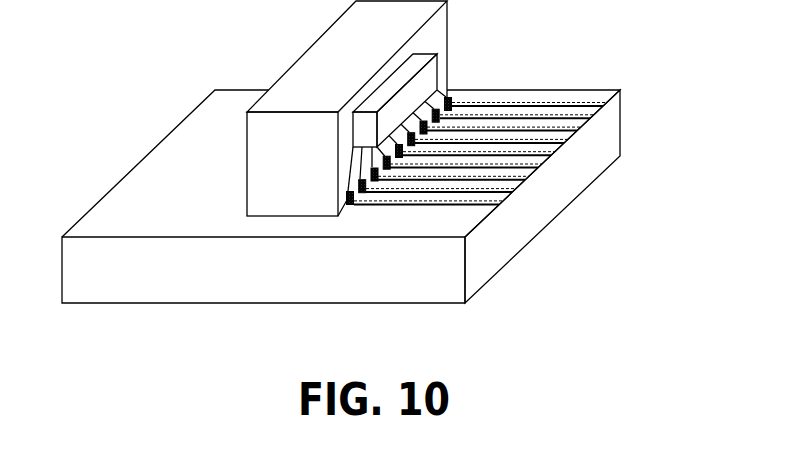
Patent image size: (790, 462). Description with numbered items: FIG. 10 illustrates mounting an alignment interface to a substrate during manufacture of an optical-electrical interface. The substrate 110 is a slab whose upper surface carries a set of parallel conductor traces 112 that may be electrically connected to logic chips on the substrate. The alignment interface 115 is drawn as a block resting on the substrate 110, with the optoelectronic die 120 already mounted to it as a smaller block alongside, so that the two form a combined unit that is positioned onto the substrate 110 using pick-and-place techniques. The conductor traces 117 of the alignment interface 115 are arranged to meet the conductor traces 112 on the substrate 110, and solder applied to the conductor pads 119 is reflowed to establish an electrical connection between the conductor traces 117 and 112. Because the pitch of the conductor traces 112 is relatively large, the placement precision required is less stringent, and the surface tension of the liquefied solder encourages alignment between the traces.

The substrate 110 is at (310, 284).
The conductor traces 112 is at (602, 106).
The alignment interface 115 is at (312, 168).
The conductor traces 117 is at (348, 177).
The conductor pads 119 is at (452, 106).
The optoelectronic die 120 is at (427, 80).